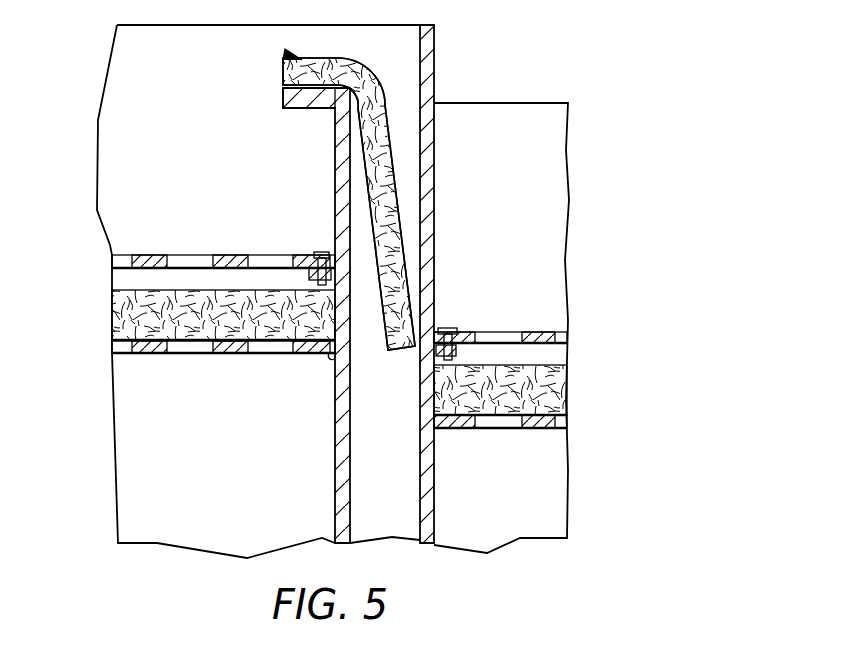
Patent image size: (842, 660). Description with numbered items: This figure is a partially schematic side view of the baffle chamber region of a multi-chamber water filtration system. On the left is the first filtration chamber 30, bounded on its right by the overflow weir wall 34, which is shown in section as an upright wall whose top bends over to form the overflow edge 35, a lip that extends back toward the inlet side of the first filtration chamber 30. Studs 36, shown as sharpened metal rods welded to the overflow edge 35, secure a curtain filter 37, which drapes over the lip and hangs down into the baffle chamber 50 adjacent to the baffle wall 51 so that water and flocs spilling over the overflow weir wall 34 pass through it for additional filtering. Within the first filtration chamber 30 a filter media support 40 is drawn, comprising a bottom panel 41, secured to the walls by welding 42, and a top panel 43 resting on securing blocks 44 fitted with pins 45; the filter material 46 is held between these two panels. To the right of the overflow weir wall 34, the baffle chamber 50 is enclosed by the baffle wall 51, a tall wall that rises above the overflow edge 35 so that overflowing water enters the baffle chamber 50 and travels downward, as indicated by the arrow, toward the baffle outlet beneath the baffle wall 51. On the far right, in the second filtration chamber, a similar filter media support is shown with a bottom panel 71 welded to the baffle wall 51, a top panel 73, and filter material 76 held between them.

The first filtration chamber 30 is at (197, 108).
The overflow weir wall 34 is at (335, 168).
The overflow edge 35 is at (285, 80).
The studs 36 is at (285, 55).
The curtain filter 37 is at (386, 133).
The filter media support 40 is at (182, 300).
The bottom panel 41 is at (188, 353).
The welding 42 is at (330, 357).
The top panel 43 is at (148, 255).
The securing blocks 44 is at (308, 275).
The pins 45 is at (320, 250).
The filter material 46 is at (132, 318).
The first baffle chamber 50 is at (390, 507).
The baffle wall 51 is at (434, 197).
The bottom panel 71 is at (537, 430).
The top panel 73 is at (510, 332).
The filter material 76 is at (492, 430).